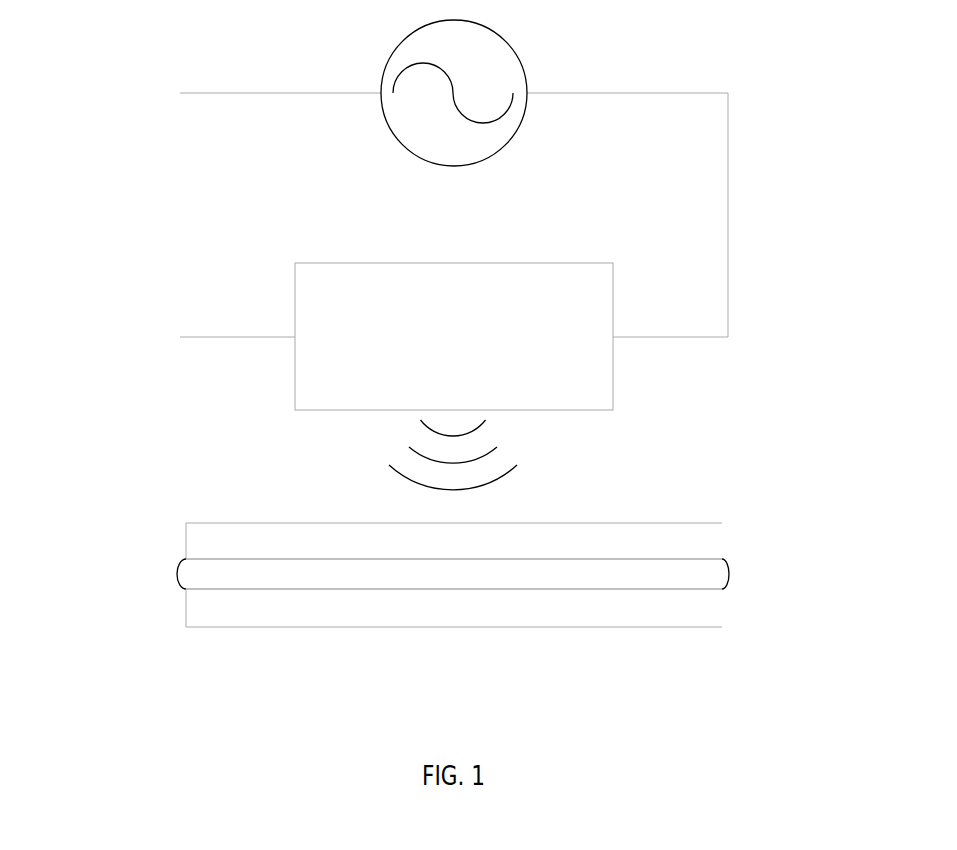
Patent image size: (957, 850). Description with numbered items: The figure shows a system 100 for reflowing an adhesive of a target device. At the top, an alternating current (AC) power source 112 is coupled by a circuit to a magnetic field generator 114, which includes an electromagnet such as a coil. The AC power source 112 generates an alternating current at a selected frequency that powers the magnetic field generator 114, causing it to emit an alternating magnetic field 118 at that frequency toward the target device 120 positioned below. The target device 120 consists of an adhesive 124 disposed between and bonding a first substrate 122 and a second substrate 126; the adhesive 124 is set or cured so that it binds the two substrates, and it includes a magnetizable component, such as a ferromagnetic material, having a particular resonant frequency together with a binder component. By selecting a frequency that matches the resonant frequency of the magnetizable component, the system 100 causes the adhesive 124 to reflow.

The system 100 is at (740, 60).
The alternating current (AC) power source 112 is at (503, 40).
The magnetic field generator 114 is at (483, 263).
The alternating magnetic field 118 is at (492, 450).
The target device 120 is at (462, 570).
The first substrate 122 is at (723, 540).
The adhesive 124 is at (725, 577).
The second substrate 126 is at (722, 627).